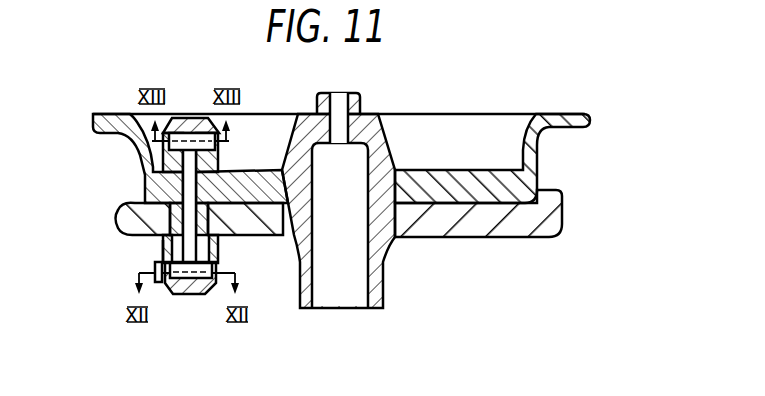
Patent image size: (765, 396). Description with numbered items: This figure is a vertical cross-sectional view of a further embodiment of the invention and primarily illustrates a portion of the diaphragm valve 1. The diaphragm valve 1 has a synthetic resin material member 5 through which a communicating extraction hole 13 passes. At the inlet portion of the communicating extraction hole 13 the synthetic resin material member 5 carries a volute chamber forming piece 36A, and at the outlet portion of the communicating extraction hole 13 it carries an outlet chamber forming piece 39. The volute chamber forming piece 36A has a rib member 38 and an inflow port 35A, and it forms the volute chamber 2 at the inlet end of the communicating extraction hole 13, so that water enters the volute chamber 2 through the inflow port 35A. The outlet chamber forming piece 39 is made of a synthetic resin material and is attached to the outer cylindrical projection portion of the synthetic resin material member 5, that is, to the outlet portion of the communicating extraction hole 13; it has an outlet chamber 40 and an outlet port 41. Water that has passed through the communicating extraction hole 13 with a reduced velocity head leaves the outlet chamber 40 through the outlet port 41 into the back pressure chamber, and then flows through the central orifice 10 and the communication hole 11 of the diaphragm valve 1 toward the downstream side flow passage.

The diaphragm valve 1 is at (497, 237).
The volute chamber 2 is at (166, 292).
The synthetic resin material member 5 is at (464, 177).
The central orifice 10 is at (341, 100).
The communication hole 11 is at (345, 302).
The communicating extraction hole 13 is at (185, 180).
The inflow port 35A is at (157, 265).
The volute chamber forming piece 36A is at (193, 294).
The rib member 38 is at (159, 285).
The outlet chamber forming piece 39 is at (182, 117).
The outlet chamber 40 is at (194, 131).
The outlet port 41 is at (218, 147).